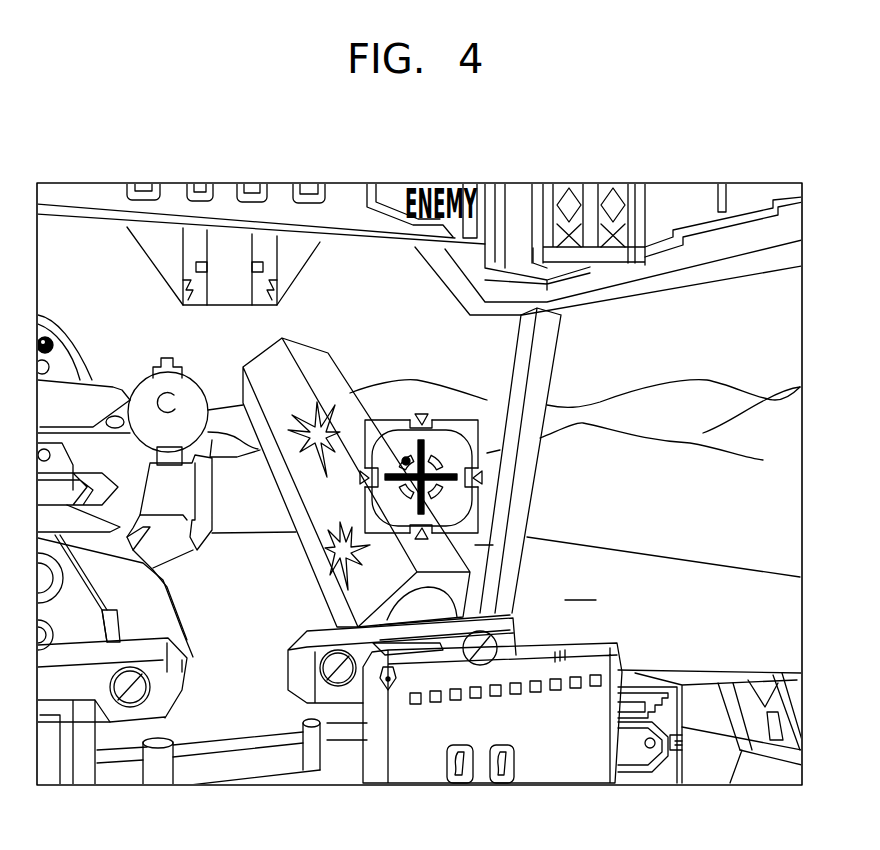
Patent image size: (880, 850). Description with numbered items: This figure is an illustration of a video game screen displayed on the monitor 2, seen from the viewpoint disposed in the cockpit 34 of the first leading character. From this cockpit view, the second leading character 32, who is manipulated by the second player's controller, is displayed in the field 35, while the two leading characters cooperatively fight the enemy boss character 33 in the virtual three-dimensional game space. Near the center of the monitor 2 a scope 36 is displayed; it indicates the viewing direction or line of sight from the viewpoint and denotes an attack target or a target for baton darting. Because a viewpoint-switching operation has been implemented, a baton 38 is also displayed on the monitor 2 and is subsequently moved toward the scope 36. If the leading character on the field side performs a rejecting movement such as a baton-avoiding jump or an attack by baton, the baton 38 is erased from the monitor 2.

The monitor 2 is at (767, 317).
The second leading character 32 is at (408, 465).
The enemy boss character 33 is at (68, 342).
The cockpit 34 is at (605, 670).
The field 35 is at (581, 588).
The scope 36 is at (476, 421).
The baton 38 is at (327, 378).